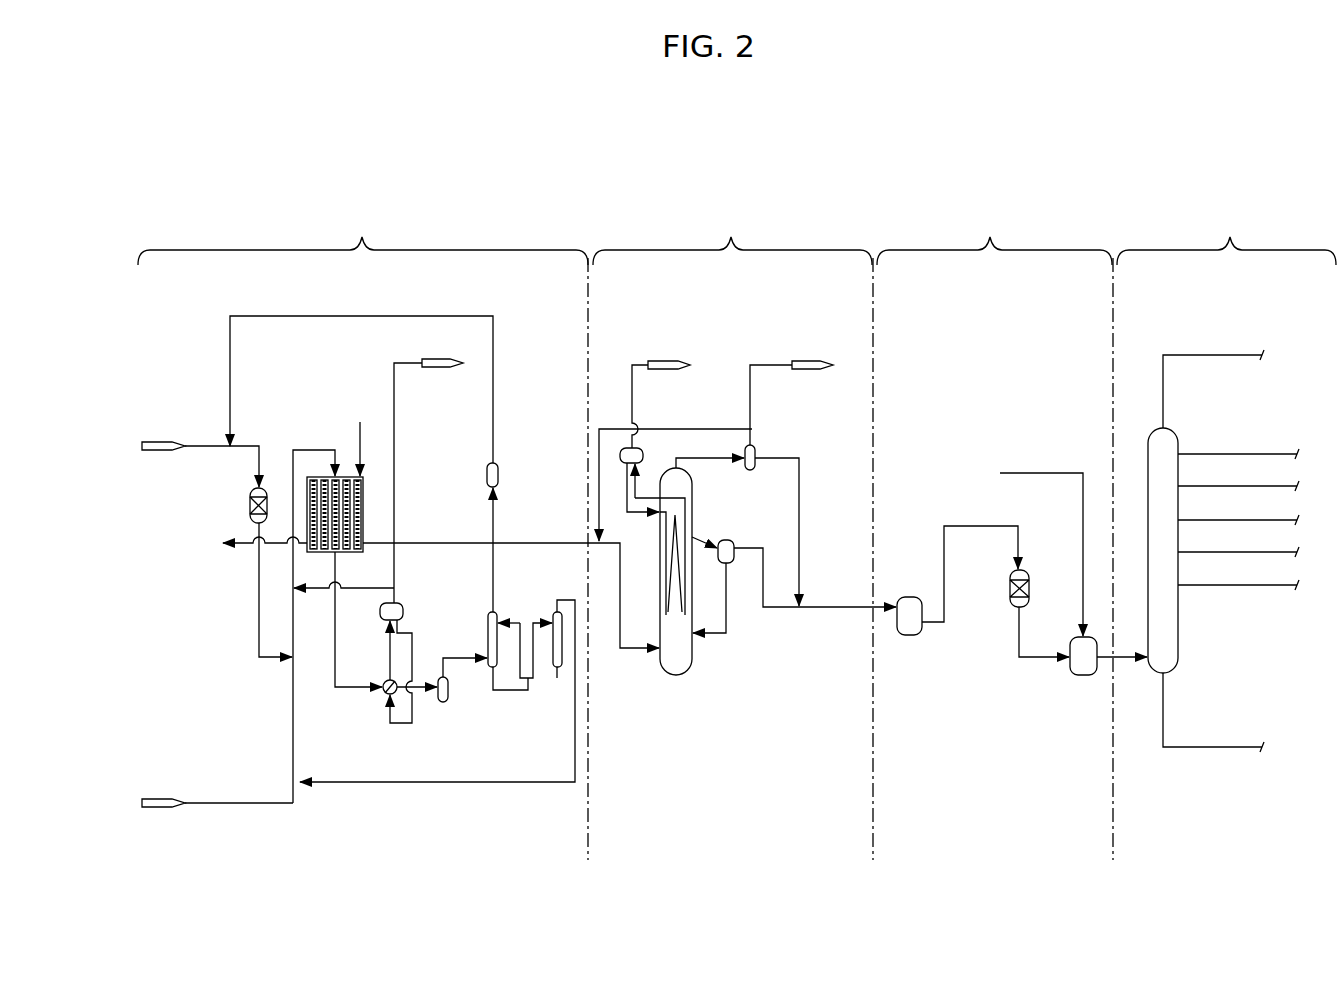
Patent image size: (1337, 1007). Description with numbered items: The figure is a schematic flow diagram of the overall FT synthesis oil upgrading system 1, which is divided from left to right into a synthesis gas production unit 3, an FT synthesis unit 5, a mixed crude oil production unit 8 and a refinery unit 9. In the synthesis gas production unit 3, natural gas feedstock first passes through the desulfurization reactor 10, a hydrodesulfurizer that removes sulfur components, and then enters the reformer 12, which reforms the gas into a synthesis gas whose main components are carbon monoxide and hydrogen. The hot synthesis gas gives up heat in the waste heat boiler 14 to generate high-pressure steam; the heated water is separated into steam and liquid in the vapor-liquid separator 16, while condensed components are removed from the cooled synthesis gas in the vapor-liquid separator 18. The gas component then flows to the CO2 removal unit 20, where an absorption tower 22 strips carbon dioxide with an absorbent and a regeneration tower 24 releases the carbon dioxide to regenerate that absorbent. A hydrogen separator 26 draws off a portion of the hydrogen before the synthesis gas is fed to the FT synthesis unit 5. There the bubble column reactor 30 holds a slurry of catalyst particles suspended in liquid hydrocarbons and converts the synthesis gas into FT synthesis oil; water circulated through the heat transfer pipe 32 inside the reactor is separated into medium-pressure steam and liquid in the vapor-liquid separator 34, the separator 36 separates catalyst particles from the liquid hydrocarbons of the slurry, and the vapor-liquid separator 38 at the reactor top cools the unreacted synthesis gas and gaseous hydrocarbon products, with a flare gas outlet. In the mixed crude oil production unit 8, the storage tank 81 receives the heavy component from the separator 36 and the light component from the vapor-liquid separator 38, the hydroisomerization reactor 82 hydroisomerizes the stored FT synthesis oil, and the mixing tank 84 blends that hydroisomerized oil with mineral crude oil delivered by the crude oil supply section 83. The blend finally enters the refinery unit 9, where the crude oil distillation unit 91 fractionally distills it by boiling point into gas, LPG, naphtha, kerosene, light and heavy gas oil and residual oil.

The FT synthesis oil upgrading system 1 is at (705, 164).
The synthesis gas production unit 3 is at (357, 511).
The FT synthesis unit 5 is at (694, 439).
The mixed crude oil production unit 8 is at (1012, 470).
The refinery unit 9 is at (1226, 478).
The desulfurization reactor 10 is at (250, 497).
The reformer 12 is at (363, 492).
The waste heat boiler 14 is at (385, 694).
The vapor-liquid separator 16 is at (403, 608).
The vapor-liquid separator 18 is at (448, 703).
The CO2 removal unit 20 is at (522, 690).
The absorption tower 22 is at (487, 668).
The regeneration tower 24 is at (553, 672).
The hydrogen separator 26 is at (498, 475).
The bubble column reactor 30 is at (690, 571).
The heat transfer pipe 32 is at (688, 500).
The vapor-liquid separator 34 is at (643, 452).
The separator 36 is at (730, 540).
The vapor-liquid separator 38 is at (755, 450).
The storage tank 81 is at (910, 635).
The hydroisomerization reactor 82 is at (1010, 576).
The crude oil supply section 83 is at (1058, 446).
The mixing tank 84 is at (1085, 675).
The crude oil distillation unit 91 is at (1178, 640).